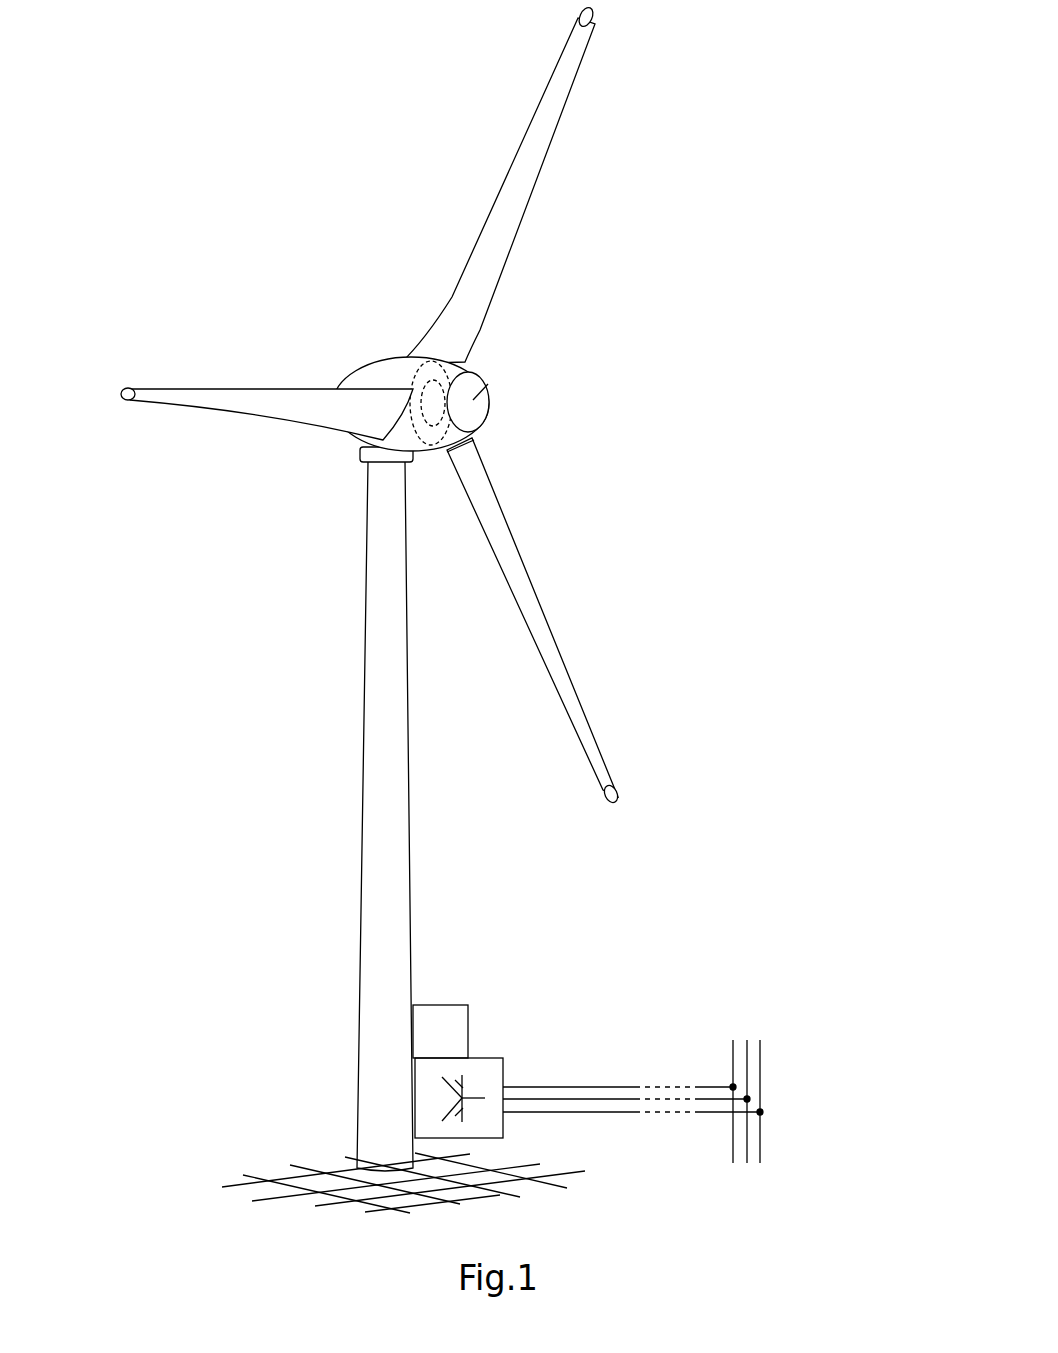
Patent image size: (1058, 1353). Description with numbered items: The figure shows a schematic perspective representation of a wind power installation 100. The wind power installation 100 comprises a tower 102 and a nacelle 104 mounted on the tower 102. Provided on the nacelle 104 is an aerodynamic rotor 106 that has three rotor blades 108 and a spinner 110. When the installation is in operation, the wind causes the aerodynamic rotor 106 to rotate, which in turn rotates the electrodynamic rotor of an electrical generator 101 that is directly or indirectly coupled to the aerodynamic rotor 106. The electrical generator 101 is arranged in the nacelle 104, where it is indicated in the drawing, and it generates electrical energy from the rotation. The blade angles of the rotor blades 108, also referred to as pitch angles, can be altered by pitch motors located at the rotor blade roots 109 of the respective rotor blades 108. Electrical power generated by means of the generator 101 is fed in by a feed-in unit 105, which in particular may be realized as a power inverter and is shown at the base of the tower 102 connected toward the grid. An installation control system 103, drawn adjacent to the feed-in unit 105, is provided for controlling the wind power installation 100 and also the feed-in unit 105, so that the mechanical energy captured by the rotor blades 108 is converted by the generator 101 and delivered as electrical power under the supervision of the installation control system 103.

The wind power installation 100 is at (316, 540).
The electrical generator 101 is at (437, 380).
The tower 102 is at (393, 817).
The installation control system 103 is at (467, 1028).
The nacelle 104 is at (382, 380).
The feed-in unit 105 is at (503, 1125).
The aerodynamic rotor 106 is at (565, 318).
The rotor blades 108 is at (530, 147).
The rotor blade roots 109 is at (473, 440).
The spinner 110 is at (473, 400).